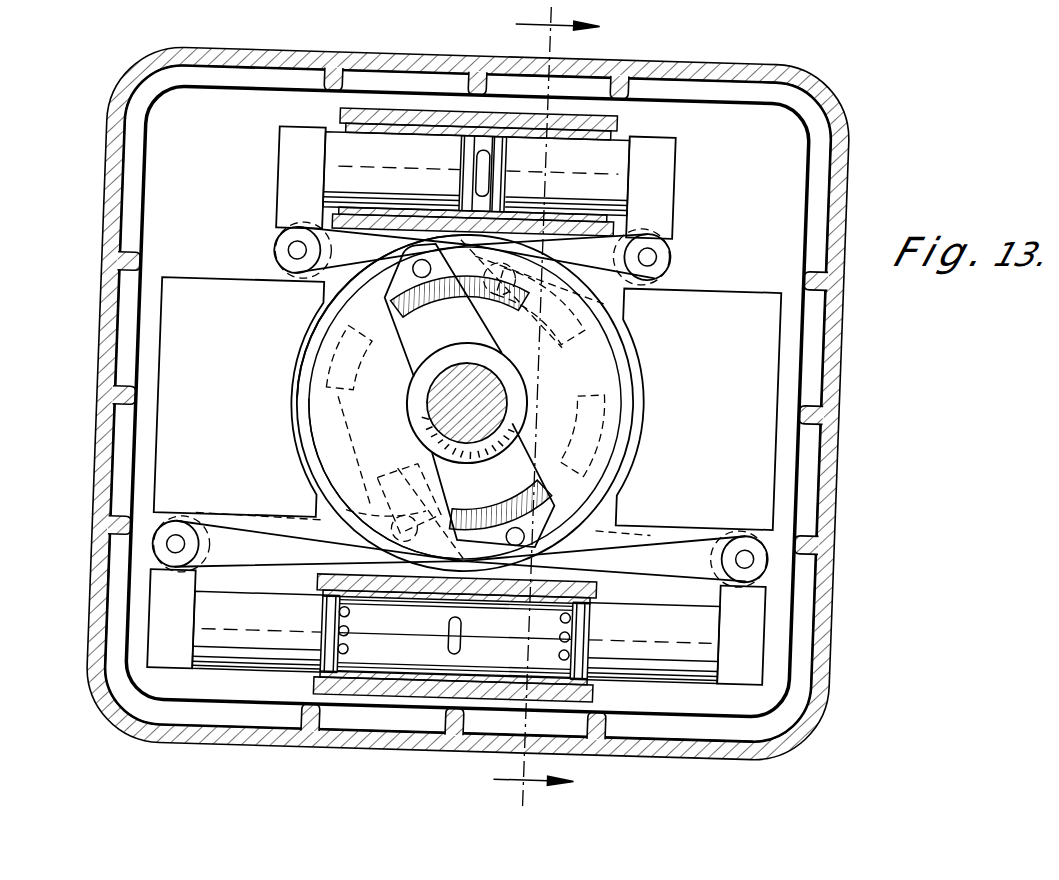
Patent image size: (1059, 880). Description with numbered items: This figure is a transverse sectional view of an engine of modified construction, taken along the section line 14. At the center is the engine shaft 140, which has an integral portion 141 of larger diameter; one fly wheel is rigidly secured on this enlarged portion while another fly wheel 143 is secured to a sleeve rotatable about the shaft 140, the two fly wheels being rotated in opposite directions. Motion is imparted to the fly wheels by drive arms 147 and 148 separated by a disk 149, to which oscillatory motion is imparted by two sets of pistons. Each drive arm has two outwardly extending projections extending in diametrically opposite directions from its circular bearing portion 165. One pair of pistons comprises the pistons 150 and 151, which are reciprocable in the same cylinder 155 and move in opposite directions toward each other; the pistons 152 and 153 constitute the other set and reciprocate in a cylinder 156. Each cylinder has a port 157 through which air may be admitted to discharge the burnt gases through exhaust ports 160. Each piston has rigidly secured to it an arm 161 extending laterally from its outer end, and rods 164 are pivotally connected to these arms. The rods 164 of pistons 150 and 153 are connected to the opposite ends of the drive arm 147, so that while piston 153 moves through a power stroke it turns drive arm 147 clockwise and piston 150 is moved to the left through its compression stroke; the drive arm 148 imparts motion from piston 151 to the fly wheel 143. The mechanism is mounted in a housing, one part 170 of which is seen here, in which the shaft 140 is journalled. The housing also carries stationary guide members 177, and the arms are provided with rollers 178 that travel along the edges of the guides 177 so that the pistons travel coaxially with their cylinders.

The section line 14- 14 is at (522, 410).
The engine shaft 140 is at (296, 407).
The integral portion of larger diameter 141 is at (310, 412).
The fly wheel 143 is at (623, 340).
The drive arm 147 is at (392, 362).
The drive arm 148 is at (548, 352).
The disk 149 is at (625, 412).
The piston 150 is at (664, 662).
The piston 151 is at (262, 660).
The piston 152 is at (326, 135).
The piston 153 is at (612, 152).
The cylinder 155 is at (413, 676).
The cylinder 156 is at (393, 122).
The port 157 is at (466, 167).
The exhaust ports 160 is at (358, 617).
The arm 161 is at (290, 183).
The rods 164 is at (350, 272).
The circular bearing portions 165 is at (527, 403).
The housing part 170 is at (800, 78).
The stationary guide members 177 is at (170, 306).
The rollers 178 is at (269, 257).